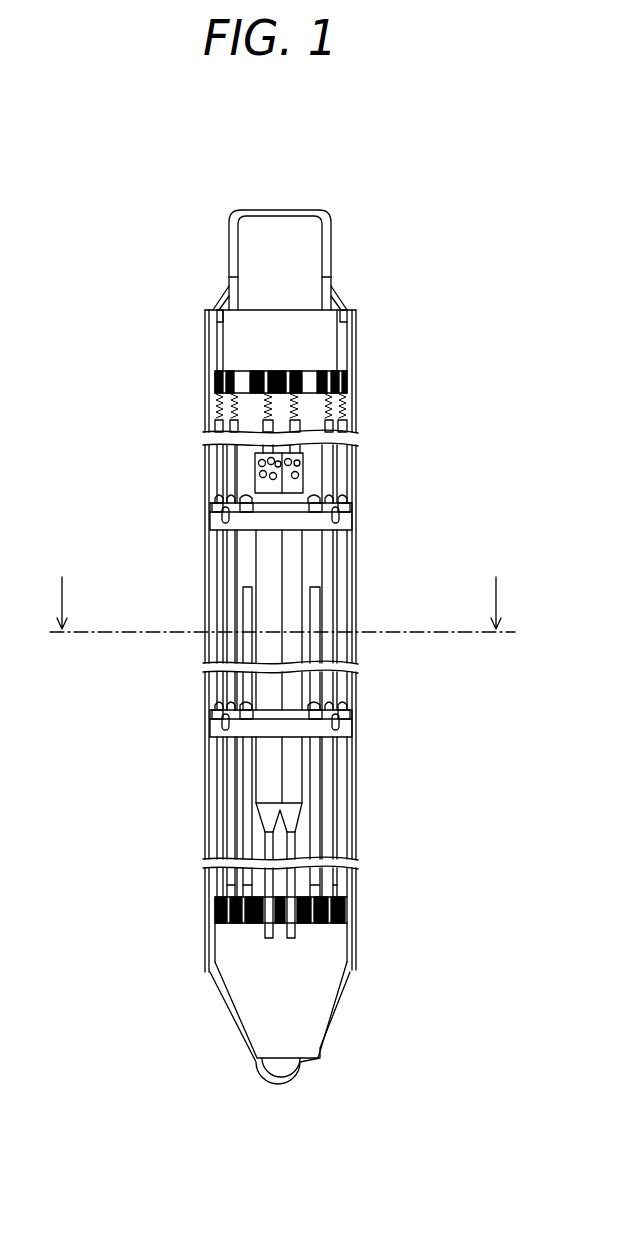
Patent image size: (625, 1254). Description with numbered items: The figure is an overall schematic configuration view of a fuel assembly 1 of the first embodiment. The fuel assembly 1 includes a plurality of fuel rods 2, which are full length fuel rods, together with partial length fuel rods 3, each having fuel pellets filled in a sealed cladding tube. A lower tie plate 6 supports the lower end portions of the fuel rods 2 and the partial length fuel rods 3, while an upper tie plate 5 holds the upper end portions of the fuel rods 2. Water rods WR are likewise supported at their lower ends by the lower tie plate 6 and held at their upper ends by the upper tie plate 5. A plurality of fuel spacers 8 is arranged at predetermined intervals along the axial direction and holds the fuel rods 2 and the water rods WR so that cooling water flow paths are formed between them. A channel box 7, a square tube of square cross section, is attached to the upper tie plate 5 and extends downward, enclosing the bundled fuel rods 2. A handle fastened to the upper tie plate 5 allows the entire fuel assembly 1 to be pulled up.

The fuel assembly 1 is at (211, 190).
The fuel rod 2 is at (340, 467).
The partial length fuel rod 3 is at (318, 603).
The upper tie plate 5 is at (215, 382).
The lower tie plate 6 is at (346, 912).
The channel box 7 is at (355, 770).
The fuel spacer 8 is at (222, 722).
The water rod WR is at (265, 546).